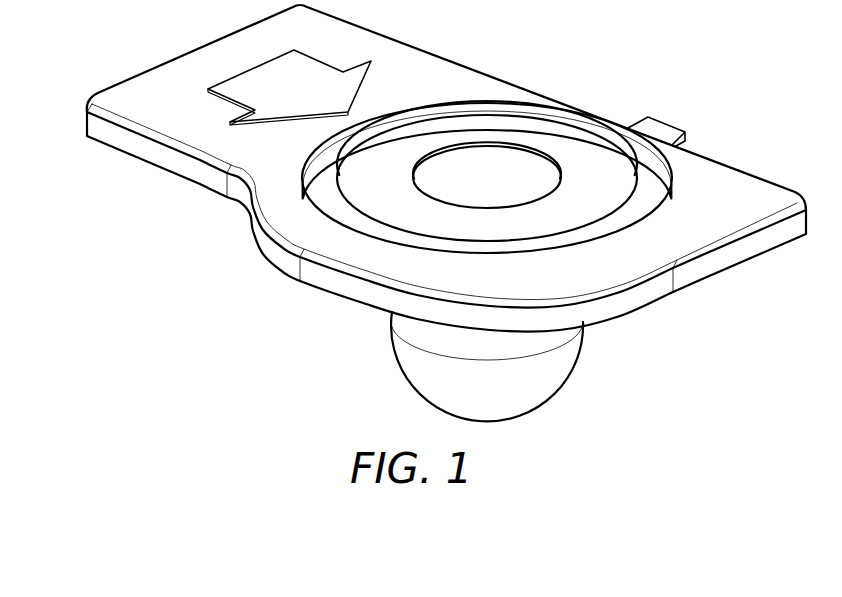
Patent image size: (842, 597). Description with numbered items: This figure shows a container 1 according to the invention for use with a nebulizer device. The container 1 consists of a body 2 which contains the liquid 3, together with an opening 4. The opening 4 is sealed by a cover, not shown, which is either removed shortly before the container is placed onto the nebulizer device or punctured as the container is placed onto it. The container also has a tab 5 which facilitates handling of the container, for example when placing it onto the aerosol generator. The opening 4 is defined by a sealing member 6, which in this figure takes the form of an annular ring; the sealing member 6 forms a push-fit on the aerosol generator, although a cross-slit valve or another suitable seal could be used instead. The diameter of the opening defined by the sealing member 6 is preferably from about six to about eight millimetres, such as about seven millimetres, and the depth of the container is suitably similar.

The container 1 is at (77, 4).
The body 2 is at (577, 361).
The liquid 3 is at (431, 378).
The opening 4 is at (515, 167).
The tab 5 is at (168, 90).
The sealing member 6 is at (613, 177).